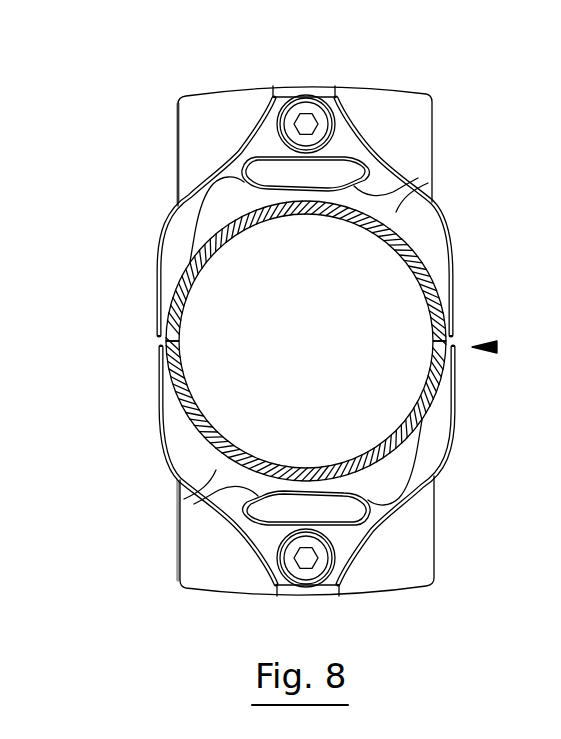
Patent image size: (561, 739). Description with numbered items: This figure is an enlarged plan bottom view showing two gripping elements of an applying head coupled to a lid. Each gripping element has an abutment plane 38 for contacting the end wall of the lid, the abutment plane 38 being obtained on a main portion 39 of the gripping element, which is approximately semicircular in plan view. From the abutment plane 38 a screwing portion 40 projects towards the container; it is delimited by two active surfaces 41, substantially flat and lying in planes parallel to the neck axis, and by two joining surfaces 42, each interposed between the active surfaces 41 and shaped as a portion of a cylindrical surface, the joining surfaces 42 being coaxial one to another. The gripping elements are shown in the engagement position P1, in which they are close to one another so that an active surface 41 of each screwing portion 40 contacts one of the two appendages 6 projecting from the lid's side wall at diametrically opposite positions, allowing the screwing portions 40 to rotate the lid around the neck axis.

The appendage 6 is at (192, 230).
The abutment plane 38 is at (418, 188).
The main portion 39 is at (445, 233).
The screwing portion 40 is at (334, 171).
The active surface 41 is at (220, 181).
The joining surface 42 is at (275, 122).
The engagement position P1 is at (497, 347).